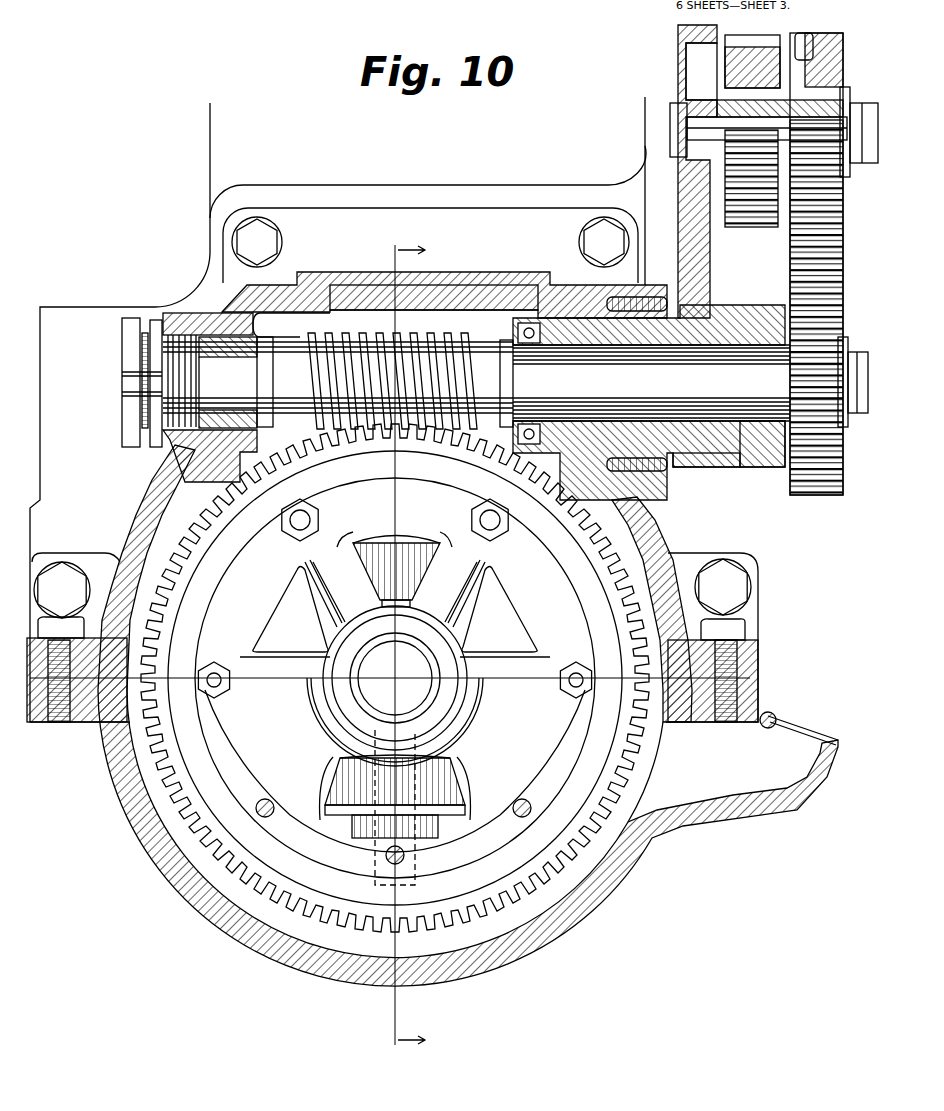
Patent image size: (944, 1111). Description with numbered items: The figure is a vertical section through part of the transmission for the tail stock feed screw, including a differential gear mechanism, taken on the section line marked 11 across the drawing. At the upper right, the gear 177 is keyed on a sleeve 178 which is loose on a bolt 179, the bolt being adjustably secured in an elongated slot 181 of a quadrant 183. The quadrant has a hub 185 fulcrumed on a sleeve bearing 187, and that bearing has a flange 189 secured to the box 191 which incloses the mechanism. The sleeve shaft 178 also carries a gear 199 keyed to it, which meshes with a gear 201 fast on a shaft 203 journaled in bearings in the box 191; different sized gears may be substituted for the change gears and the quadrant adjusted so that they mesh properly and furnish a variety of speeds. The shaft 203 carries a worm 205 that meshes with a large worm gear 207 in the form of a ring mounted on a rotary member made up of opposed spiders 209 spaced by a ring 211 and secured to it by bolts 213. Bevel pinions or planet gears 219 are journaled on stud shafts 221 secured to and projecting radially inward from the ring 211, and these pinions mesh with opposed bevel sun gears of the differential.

The gear 177 is at (745, 42).
The sleeve 178 is at (690, 112).
The bolt 179 is at (693, 130).
The elongated slot 181 is at (695, 88).
The quadrant 183 is at (716, 250).
The hub 185 is at (688, 468).
The sleeve bearing 187 is at (730, 445).
The flange 189 is at (645, 485).
The box 191 is at (247, 292).
The gear 199 is at (822, 45).
The gear 201 is at (825, 470).
The shaft 203 is at (695, 362).
The worm 205 is at (386, 335).
The worm gear 207 is at (618, 786).
The spiders 209 is at (540, 605).
The ring 211 is at (276, 738).
The bolts 213 is at (300, 530).
The bevel pinions 219 is at (452, 785).
The stud shafts 221 is at (420, 857).
The section line 11- 11 is at (390, 653).